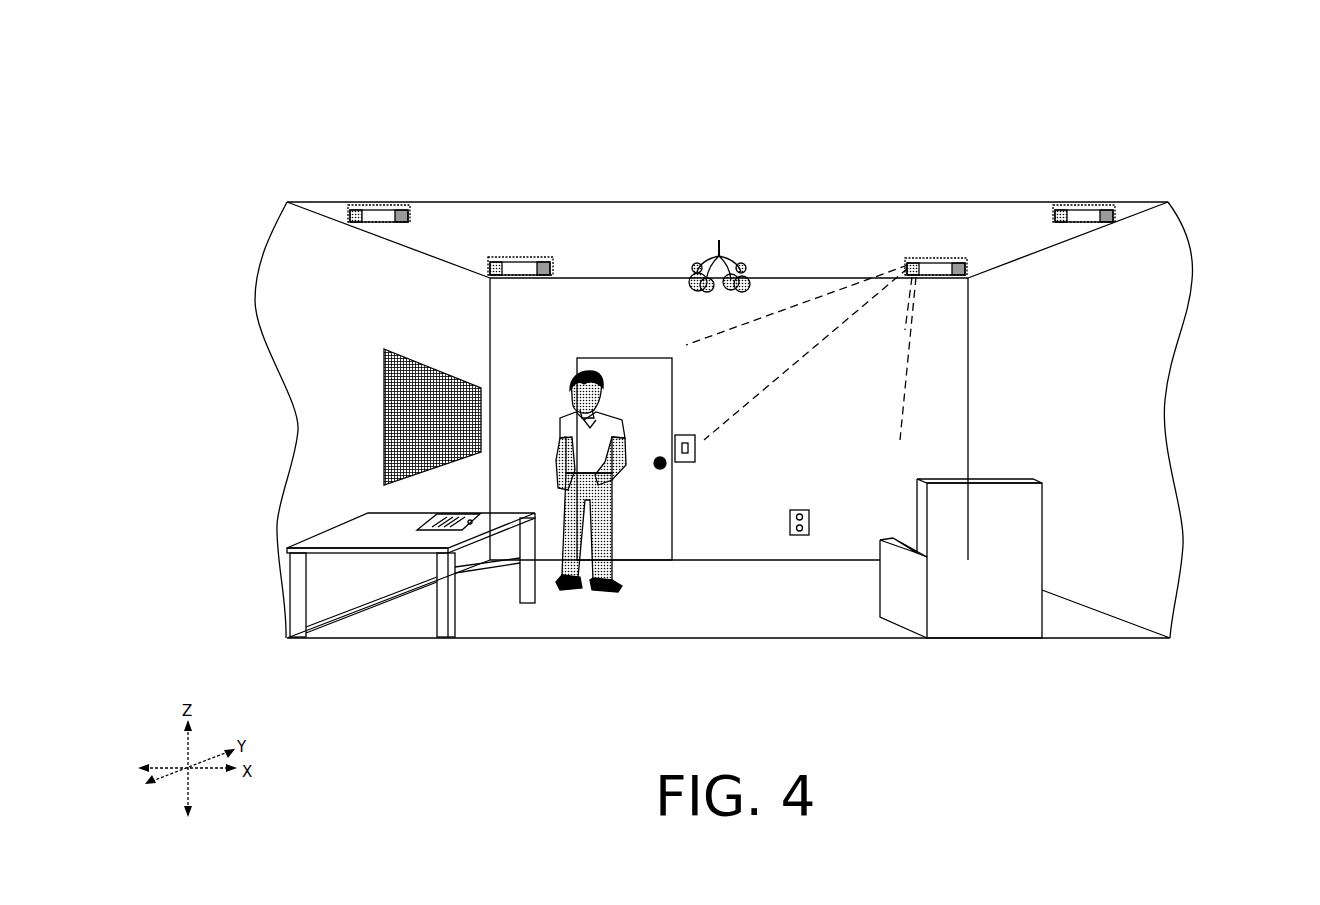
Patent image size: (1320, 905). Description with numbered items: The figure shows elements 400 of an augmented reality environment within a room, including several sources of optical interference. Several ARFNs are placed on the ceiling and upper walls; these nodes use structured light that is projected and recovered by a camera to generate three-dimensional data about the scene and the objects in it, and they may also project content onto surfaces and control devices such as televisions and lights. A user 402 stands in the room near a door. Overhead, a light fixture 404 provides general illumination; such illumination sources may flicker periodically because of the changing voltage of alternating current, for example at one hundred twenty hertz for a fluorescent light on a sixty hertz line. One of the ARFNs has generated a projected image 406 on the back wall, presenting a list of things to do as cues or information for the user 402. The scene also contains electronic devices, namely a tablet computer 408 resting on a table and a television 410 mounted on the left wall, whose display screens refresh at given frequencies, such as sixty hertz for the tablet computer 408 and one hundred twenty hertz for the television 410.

The elements of the augmented reality environment 400 is at (1242, 86).
The user 402 is at (568, 372).
The light fixture 404 is at (718, 250).
The projected image 406 is at (800, 345).
The tablet computer 408 is at (440, 532).
The television 410 is at (384, 413).